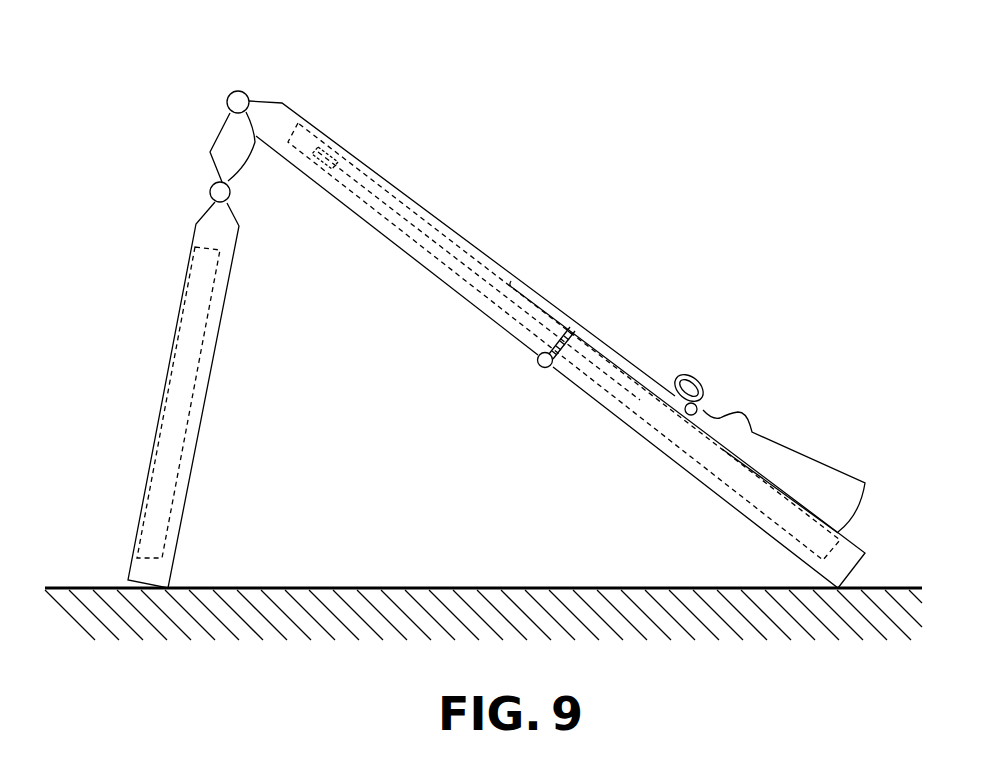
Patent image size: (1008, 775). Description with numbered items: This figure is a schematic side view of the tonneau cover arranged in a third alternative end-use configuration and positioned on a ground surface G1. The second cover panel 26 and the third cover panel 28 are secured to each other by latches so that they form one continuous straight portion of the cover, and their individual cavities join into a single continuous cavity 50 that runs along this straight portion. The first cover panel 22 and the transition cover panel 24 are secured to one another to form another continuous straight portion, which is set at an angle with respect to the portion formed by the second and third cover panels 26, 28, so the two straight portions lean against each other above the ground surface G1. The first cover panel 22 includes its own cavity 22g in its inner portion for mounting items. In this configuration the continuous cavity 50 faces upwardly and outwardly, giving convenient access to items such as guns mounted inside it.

The first cover panel 22 is at (164, 394).
The first cover panel cavity 22g is at (195, 290).
The transition cover panel 24 is at (211, 146).
The second cover panel 26 is at (378, 230).
The third cover panel 28 is at (632, 428).
The continuous cavity 50 is at (300, 131).
The ground surface G1 is at (88, 588).